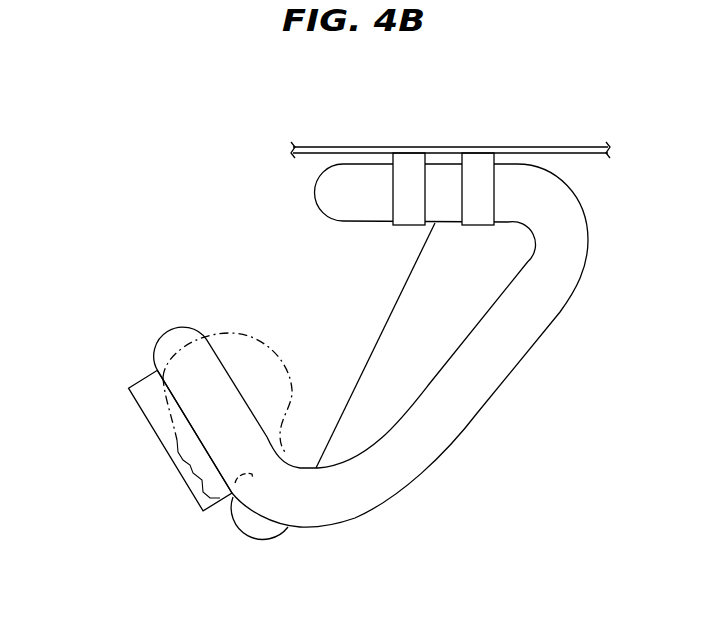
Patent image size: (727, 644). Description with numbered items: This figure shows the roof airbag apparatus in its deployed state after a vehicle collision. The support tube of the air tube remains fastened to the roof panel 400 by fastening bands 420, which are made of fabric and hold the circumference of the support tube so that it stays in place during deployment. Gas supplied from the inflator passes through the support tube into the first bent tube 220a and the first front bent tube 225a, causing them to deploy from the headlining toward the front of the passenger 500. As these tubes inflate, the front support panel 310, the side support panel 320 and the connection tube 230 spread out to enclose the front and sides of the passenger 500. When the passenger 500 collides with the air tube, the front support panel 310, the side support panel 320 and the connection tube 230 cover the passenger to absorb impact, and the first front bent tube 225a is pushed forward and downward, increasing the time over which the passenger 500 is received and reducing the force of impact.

The first bent tube 220a is at (473, 390).
The side support panel 320 is at (408, 315).
The fastening band 420 is at (475, 165).
The roof panel 400 is at (577, 150).
The passenger 500 is at (232, 332).
The front support panel 310 is at (143, 417).
The first front bent tube 225a is at (202, 415).
The connection tube 230 is at (243, 528).